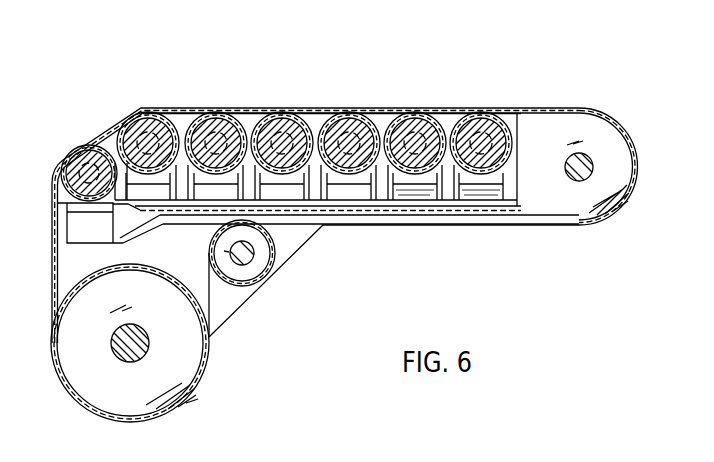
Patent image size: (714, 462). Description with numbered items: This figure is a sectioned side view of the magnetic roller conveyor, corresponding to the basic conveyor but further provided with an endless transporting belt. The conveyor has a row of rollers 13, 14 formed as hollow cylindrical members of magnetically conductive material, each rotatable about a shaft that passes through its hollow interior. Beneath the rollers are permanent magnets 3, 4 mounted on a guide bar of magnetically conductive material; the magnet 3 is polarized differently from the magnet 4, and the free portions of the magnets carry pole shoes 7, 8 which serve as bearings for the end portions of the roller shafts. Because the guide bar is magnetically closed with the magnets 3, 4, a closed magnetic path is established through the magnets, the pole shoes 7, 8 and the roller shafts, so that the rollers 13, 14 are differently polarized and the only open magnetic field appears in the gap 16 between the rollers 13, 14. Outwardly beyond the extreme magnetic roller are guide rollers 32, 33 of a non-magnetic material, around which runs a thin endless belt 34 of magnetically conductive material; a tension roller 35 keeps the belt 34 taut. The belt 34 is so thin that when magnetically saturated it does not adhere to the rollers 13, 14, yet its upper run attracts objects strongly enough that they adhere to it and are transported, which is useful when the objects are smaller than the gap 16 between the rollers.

The permanent magnet 3 is at (478, 193).
The permanent magnet 4 is at (434, 195).
The pole shoe 7 is at (505, 180).
The pole shoe 8 is at (406, 183).
The roller 13 is at (348, 112).
The roller 14 is at (276, 112).
The gap 16 is at (313, 117).
The guide roller 32 is at (183, 382).
The guide roller 33 is at (594, 206).
The endless belt 34 is at (533, 108).
The tension roller 35 is at (258, 267).